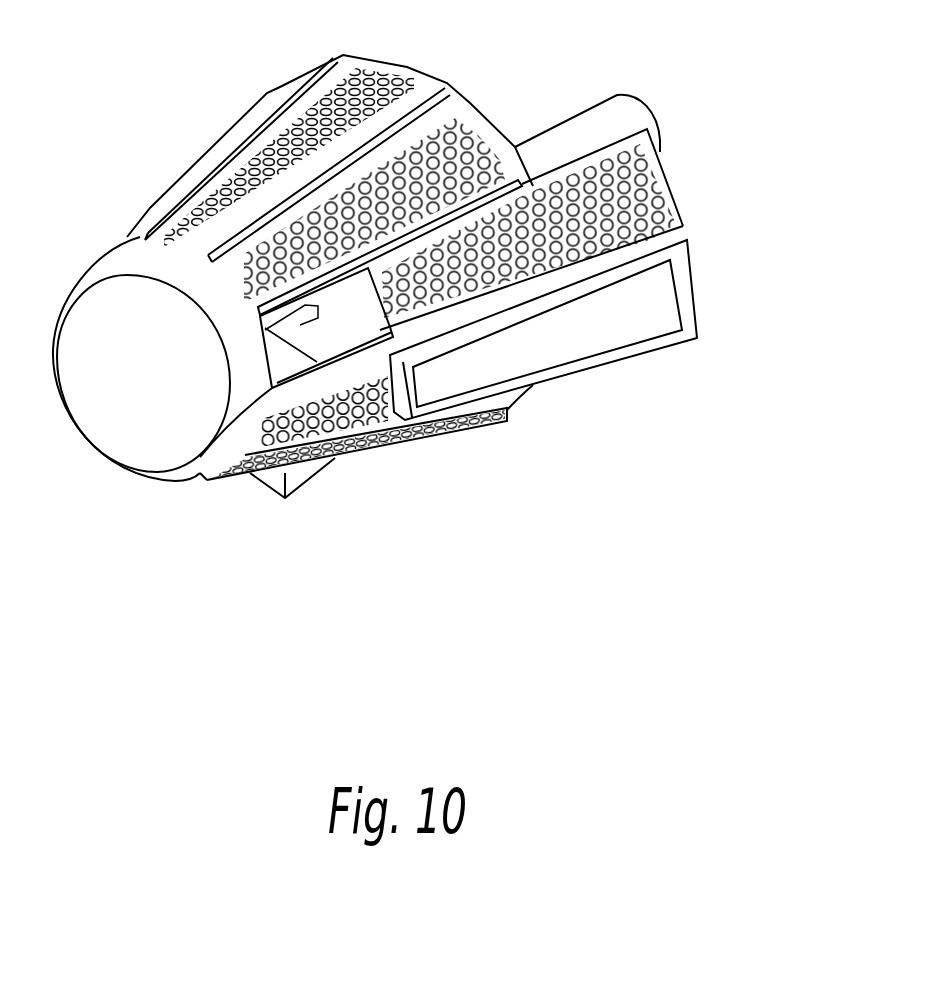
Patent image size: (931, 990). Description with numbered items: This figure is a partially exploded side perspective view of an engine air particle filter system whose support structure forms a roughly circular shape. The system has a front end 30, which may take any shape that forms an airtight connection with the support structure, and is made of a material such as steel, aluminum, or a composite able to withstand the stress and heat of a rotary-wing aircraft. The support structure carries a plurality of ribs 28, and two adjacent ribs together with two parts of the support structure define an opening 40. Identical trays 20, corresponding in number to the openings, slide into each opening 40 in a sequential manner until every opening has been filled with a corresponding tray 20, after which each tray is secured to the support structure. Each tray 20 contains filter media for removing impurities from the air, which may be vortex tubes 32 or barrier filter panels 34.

The tray 20 is at (670, 181).
The rib 28 is at (210, 447).
The front end 30 is at (148, 260).
The vortex tubes 32 is at (672, 227).
The barrier filter panels 34 is at (620, 312).
The opening 40 is at (325, 337).